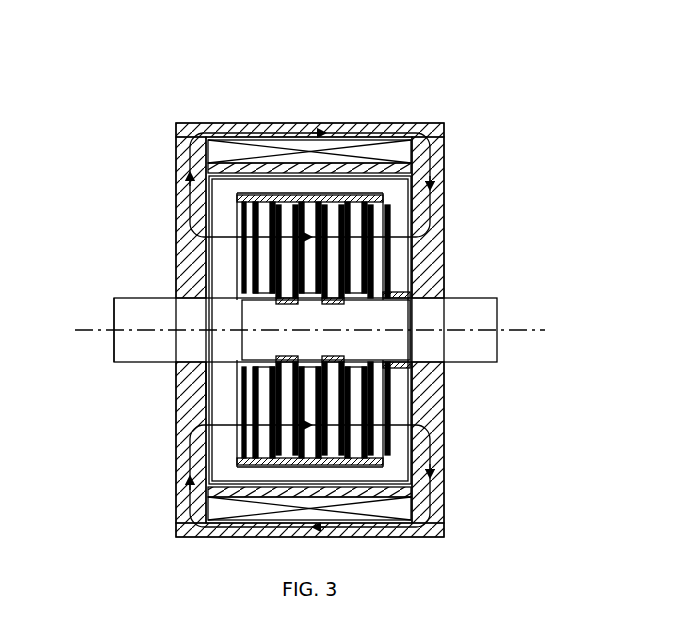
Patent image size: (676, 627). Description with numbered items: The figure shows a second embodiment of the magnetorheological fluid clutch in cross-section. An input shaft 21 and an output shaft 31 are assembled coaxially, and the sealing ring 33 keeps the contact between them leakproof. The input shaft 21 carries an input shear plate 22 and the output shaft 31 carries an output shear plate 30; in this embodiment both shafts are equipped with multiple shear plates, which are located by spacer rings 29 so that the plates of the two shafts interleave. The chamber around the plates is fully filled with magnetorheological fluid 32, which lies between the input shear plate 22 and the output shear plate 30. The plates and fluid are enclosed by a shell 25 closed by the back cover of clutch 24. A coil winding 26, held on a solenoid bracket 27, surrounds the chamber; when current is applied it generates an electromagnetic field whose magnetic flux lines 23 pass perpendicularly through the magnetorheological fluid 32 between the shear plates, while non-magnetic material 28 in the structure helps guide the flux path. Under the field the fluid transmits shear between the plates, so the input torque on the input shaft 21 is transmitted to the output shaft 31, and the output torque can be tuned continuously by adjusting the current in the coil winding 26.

The input shaft 21 is at (442, 340).
The input shear plate 22 is at (352, 290).
The magnetic flux lines 23 is at (436, 213).
The back cover of clutch 24 is at (436, 165).
The shell 25 is at (440, 150).
The coil winding 26 is at (386, 150).
The solenoid bracket 27 is at (342, 172).
The non-magnetic material 28 is at (292, 188).
The spacer rings 29 is at (262, 202).
The output shear plate 30 is at (246, 272).
The output shaft 31 is at (152, 322).
The magnetorheological fluid 32 is at (242, 388).
The sealing ring 33 is at (366, 398).